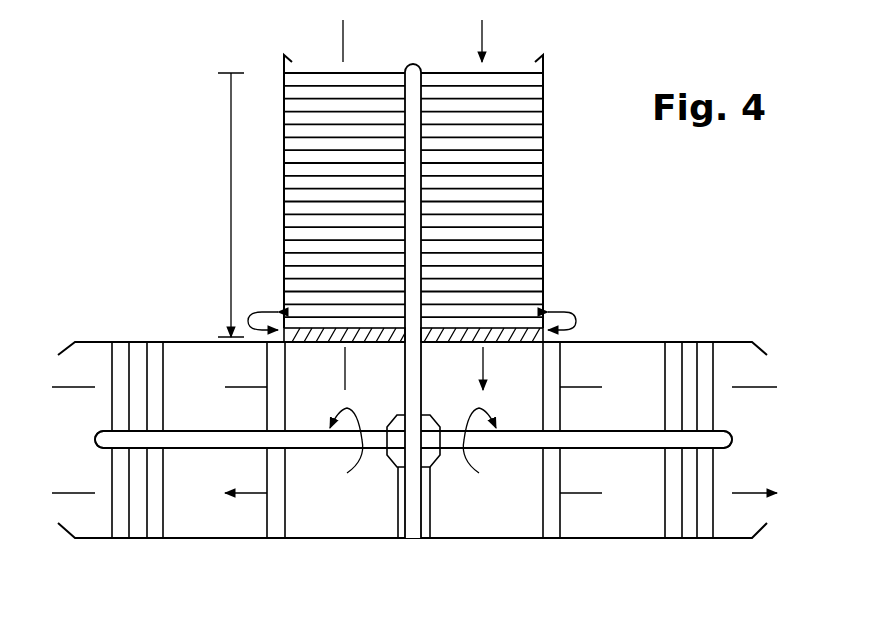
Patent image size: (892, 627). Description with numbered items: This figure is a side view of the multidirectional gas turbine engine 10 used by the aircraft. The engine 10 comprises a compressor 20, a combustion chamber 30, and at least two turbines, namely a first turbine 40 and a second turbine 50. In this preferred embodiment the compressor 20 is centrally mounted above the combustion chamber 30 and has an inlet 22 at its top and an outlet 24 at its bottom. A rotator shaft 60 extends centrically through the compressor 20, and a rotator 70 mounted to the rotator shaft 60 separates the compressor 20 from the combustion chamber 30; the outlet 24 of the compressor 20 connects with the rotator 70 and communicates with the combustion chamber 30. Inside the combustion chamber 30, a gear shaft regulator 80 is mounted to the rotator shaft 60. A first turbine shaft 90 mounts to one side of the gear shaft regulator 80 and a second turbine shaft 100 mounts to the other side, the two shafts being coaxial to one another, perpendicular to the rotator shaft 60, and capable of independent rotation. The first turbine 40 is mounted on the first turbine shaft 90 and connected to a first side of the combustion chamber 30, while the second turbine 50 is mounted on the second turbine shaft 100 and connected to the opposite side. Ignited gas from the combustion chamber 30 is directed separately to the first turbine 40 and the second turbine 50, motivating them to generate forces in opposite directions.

The gas turbine engine 10 is at (690, 212).
The compressor 20 is at (545, 172).
The inlet 22 is at (533, 63).
The outlet 24 is at (318, 330).
The combustion chamber 30 is at (510, 539).
The first turbine 40 is at (640, 342).
The second turbine 50 is at (173, 342).
The rotator shaft 60 is at (412, 63).
The rotator 70 is at (483, 330).
The gear shaft regulator 80 is at (395, 462).
The first turbine shaft 90 is at (732, 440).
The second turbine shaft 100 is at (95, 440).